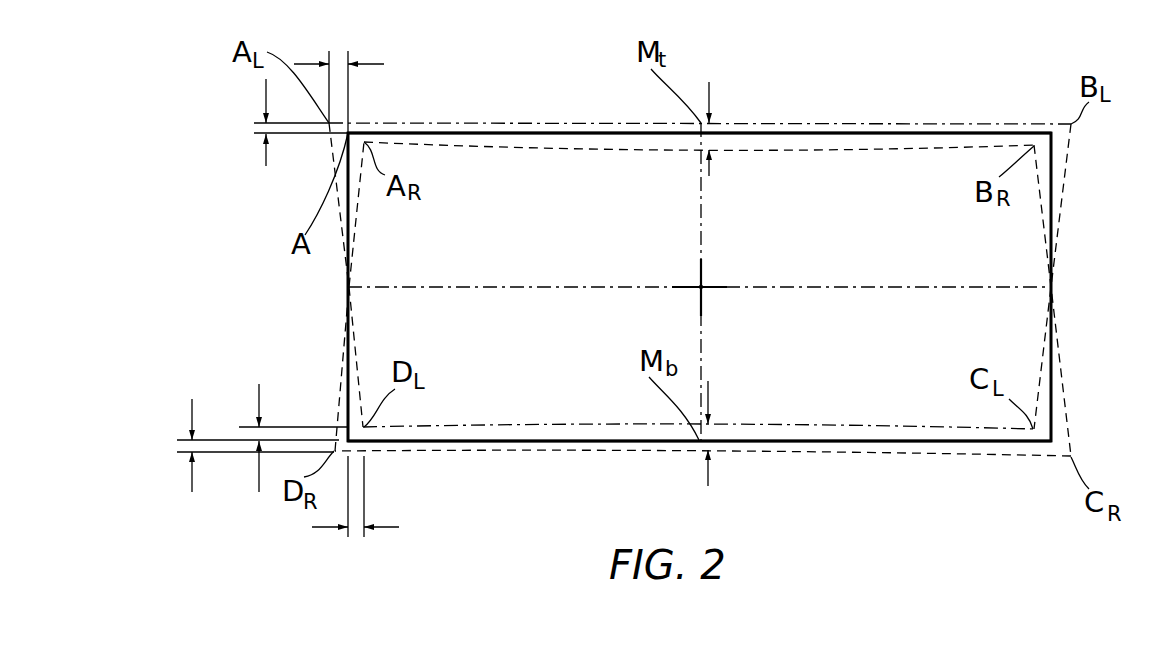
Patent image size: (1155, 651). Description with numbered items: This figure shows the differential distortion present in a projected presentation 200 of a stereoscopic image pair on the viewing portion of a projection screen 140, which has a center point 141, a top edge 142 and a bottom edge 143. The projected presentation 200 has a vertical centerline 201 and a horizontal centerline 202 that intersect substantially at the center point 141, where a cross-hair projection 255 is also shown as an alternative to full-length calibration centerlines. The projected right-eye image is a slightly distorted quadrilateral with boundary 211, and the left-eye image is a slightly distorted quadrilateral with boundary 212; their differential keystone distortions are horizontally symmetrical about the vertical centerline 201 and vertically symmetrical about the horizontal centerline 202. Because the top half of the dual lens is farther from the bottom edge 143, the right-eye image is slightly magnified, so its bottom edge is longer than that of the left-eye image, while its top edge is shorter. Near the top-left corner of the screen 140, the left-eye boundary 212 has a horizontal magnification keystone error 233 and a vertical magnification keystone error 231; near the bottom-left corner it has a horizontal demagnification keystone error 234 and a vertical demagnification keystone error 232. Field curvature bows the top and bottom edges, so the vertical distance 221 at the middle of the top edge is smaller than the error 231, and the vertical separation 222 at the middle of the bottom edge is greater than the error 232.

The projection screen 140 is at (892, 203).
The center point 141 is at (700, 286).
The top edge of the viewing area 142 is at (538, 133).
The bottom edge of the viewing area 143 is at (555, 452).
The projected presentation 200 is at (878, 474).
The vertical centerline 201 is at (702, 196).
The horizontal centerline 202 is at (890, 287).
The right-eye image boundary 211 is at (528, 150).
The left-eye image boundary 212 is at (598, 125).
The vertical distance 221 is at (720, 116).
The vertical separation 222 is at (705, 452).
The vertical magnification keystone error 231 is at (297, 143).
The vertical demagnification keystone error 232 is at (255, 424).
The horizontal magnification keystone error 233 is at (362, 92).
The horizontal demagnification keystone error 234 is at (379, 500).
The cross-hair projection 255 is at (708, 292).